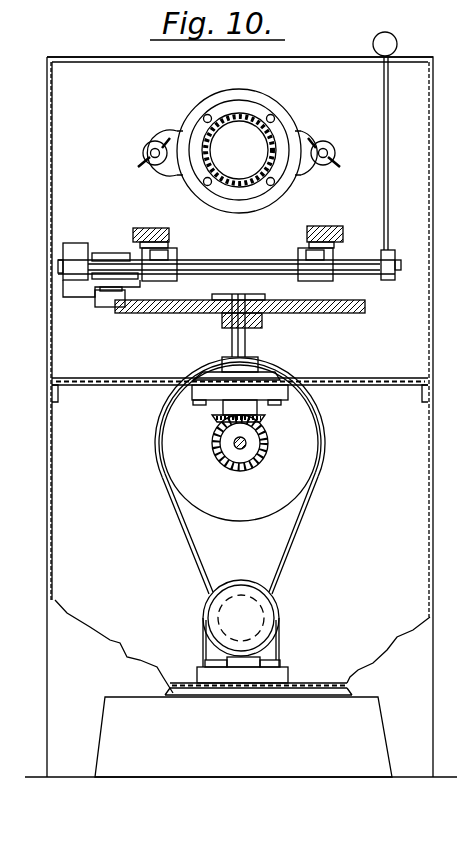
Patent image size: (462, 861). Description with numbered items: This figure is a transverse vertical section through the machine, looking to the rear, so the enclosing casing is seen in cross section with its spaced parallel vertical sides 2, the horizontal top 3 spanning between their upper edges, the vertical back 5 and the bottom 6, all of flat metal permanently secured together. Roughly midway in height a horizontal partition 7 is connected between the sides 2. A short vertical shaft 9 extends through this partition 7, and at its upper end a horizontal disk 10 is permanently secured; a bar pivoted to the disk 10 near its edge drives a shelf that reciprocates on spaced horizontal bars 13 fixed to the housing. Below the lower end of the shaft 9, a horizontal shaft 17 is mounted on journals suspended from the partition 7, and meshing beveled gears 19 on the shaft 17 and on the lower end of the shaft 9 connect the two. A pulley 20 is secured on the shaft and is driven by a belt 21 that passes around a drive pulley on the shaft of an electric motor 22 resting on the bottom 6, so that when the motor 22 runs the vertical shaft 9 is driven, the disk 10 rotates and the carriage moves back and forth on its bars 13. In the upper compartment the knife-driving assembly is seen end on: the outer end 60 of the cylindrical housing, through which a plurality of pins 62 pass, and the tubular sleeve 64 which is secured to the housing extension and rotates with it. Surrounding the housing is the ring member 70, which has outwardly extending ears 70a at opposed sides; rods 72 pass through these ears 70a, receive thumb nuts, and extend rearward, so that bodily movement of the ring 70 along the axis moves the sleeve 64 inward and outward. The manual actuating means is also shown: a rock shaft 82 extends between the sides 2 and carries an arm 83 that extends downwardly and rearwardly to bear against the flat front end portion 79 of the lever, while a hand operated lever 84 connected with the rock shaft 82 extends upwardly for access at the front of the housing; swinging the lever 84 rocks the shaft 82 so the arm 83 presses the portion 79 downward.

The vertical sides 2 is at (47, 242).
The horizontal top 3 is at (302, 60).
The vertical back 5 is at (90, 85).
The bottom 6 is at (304, 685).
The horizontal partition 7 is at (368, 384).
The vertical shaft 9 is at (248, 338).
The horizontal disk 10 is at (172, 315).
The horizontal bars 13 is at (157, 229).
The horizontal shaft 17 is at (235, 448).
The beveled gears 19 is at (263, 418).
The pulley 20 is at (300, 467).
The belt 21 is at (293, 542).
The electric motor 22 is at (253, 615).
The outer end 60 is at (276, 128).
The pins 62 is at (266, 115).
The tubular sleeve 64 is at (200, 152).
The ring member 70 is at (274, 107).
The ears 70a is at (336, 160).
The rods 72 is at (155, 158).
The front end portion 79 is at (108, 298).
The rock shaft 82 is at (255, 260).
The arm 83 is at (80, 286).
The hand operated lever 84 is at (384, 137).